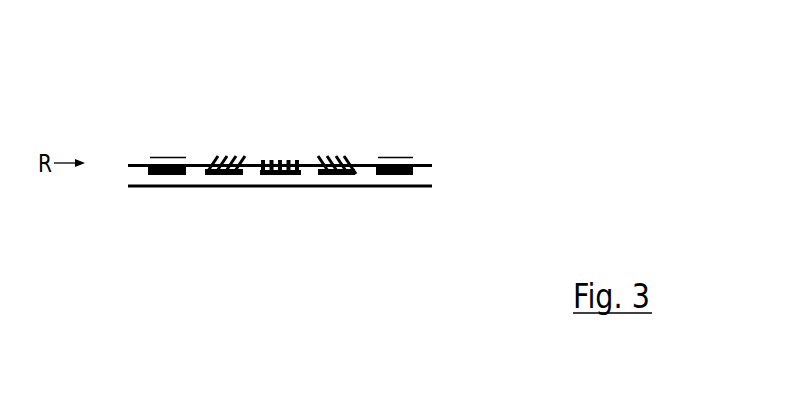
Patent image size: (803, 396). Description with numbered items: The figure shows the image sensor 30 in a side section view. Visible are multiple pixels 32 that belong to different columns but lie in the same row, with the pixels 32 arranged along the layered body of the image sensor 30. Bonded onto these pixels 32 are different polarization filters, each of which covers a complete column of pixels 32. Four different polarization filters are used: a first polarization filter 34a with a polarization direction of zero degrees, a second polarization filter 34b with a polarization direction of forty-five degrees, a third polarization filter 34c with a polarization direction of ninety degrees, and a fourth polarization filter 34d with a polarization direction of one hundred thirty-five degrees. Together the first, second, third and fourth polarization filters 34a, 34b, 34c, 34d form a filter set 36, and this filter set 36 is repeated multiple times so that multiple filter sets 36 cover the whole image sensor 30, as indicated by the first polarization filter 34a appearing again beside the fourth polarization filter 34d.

The image sensor 30 is at (440, 128).
The pixels 32 is at (162, 176).
The first polarization filter 34a is at (165, 157).
The second polarization filter 34b is at (222, 157).
The third polarization filter 34c is at (280, 158).
The fourth polarization filter 34d is at (340, 158).
The filter set 36 is at (366, 222).